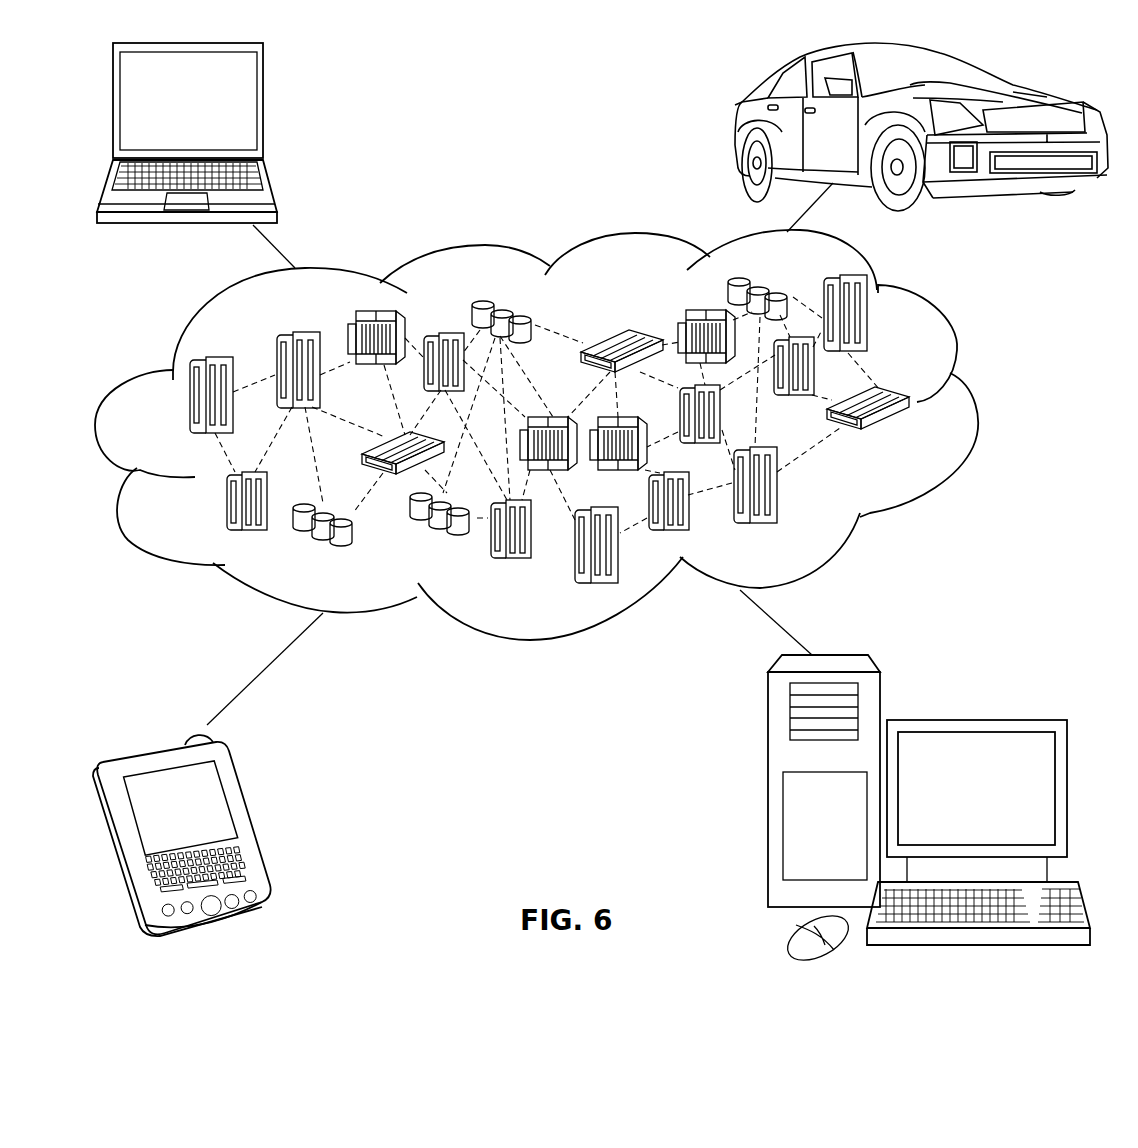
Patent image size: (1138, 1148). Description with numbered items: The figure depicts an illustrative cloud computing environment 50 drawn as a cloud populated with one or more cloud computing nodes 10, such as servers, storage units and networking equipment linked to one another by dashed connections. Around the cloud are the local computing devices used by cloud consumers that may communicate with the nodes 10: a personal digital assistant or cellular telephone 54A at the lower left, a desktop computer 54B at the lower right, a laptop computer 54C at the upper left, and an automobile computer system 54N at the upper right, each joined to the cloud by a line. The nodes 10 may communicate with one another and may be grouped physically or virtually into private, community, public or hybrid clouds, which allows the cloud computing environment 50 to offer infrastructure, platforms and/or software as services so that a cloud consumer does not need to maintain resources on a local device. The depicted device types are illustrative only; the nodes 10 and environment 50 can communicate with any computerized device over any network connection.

The cloud computing node 10 is at (914, 440).
The cloud computing environment 50 is at (975, 407).
The personal digital assistant (PDA) or cellular telephone 54A is at (253, 821).
The desktop computer 54B is at (972, 718).
The laptop computer 54C is at (264, 110).
The automobile computer system 54N is at (737, 128).